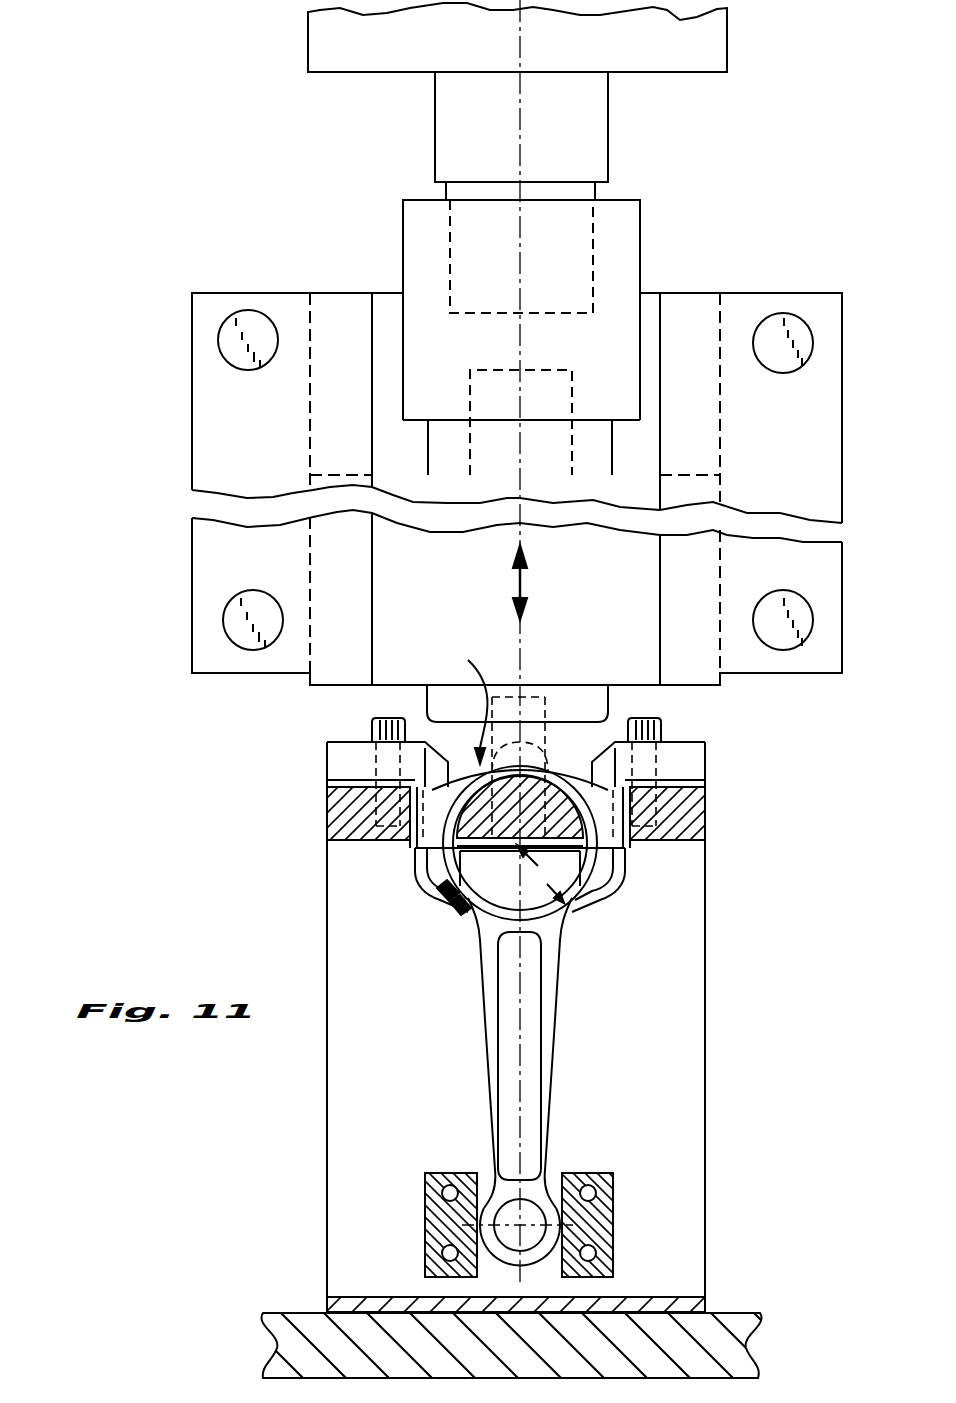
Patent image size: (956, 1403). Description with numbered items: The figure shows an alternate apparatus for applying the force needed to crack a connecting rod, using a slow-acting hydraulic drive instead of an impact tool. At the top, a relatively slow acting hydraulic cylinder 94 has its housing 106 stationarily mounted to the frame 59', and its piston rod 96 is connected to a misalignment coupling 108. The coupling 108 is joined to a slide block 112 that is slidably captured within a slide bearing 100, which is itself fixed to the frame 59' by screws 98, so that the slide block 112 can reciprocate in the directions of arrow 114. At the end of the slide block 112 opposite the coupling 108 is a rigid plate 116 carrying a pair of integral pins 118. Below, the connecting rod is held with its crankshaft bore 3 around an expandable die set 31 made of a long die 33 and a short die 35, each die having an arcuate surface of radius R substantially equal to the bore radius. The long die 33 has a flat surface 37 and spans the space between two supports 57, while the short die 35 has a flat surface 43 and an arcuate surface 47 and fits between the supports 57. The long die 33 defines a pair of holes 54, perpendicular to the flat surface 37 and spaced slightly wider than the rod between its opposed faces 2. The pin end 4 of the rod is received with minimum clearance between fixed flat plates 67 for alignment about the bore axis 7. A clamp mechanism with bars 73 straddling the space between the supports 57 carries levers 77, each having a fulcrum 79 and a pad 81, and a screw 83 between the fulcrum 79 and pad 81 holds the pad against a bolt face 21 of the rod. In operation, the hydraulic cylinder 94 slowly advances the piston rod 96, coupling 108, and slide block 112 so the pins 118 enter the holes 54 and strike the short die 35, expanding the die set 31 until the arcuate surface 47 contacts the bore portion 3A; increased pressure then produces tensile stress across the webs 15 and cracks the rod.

The opposed faces 2 is at (488, 942).
The crankshaft bore 3 is at (572, 918).
The portion of the crankshaft bore 3A is at (466, 916).
The pin end 4 is at (546, 1200).
The longitudinal axis of the crankshaft bore 7 is at (517, 852).
The webs 15 is at (418, 853).
The bolt faces 21 is at (433, 778).
The expandable die set 31 is at (433, 898).
The long die 33 is at (494, 757).
The short die 35 is at (447, 912).
The flat surface of the long die 37 is at (513, 851).
The flat surface of the short die 43 is at (607, 848).
The arcuate surface of the short die 47 is at (590, 912).
The holes 54 is at (560, 749).
The supports 57 is at (690, 1010).
The frame 59' is at (496, 1327).
The fixed flat plates 67 is at (427, 1222).
The bars 73 is at (340, 814).
The lever 77 is at (338, 745).
The fulcrum 79 is at (706, 764).
The pad 81 is at (425, 746).
The screw 83 is at (388, 718).
The hydraulic cylinder 94 is at (300, 42).
The piston rod 96 is at (452, 147).
The screws 98 is at (218, 340).
The slide bearing 100 is at (212, 540).
The housing of the hydraulic cylinder 106 is at (366, 72).
The misalignment coupling 108 is at (418, 240).
The slide block 112 is at (426, 586).
The arrow 114 is at (526, 581).
The rigid plate 116 is at (581, 700).
The pins 118 is at (459, 707).
The radius R is at (540, 874).